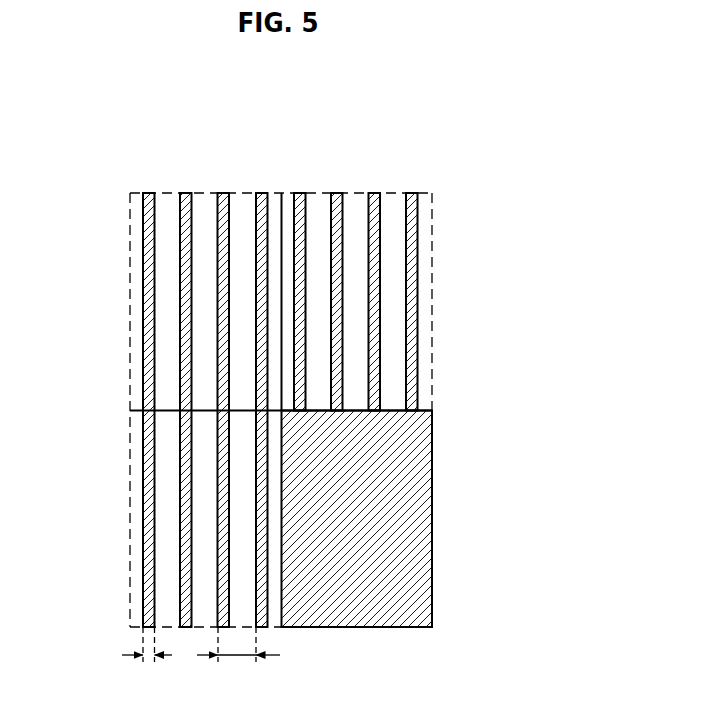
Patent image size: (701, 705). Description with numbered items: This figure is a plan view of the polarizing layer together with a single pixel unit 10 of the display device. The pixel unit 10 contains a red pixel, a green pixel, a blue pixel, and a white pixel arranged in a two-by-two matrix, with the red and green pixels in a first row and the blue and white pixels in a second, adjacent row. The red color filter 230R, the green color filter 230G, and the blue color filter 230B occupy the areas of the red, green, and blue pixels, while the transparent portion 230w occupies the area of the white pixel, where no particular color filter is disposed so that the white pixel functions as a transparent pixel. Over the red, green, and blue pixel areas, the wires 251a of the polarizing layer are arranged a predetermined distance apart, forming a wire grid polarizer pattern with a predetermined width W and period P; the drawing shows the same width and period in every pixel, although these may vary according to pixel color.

The pixel unit 10 is at (281, 399).
The wires 251a is at (373, 255).
The red color filter 230R is at (130, 305).
The green color filter 230G is at (432, 307).
The blue color filter 230B is at (130, 512).
The transparent portion 230w is at (415, 514).